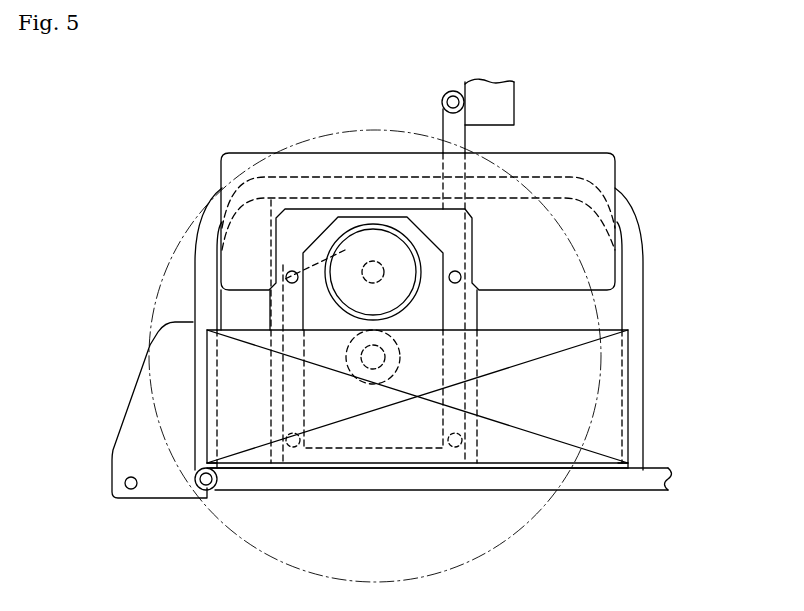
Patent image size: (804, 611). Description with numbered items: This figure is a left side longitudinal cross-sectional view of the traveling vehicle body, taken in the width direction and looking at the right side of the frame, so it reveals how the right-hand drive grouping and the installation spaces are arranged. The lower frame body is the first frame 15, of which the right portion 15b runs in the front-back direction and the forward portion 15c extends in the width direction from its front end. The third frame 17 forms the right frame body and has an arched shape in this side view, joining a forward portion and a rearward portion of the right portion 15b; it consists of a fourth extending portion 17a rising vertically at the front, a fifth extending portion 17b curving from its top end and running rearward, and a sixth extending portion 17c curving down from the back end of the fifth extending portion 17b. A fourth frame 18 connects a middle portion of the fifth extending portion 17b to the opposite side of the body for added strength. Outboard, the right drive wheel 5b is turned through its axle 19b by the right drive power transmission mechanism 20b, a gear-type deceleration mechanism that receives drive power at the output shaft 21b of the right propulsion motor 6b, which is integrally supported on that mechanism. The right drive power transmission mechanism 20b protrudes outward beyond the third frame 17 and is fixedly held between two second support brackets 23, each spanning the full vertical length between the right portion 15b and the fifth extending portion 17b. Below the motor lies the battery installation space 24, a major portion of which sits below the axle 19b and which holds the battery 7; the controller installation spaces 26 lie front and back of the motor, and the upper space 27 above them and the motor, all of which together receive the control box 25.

The right drive wheel 5b is at (497, 543).
The right propulsion motor 6b is at (357, 252).
The battery 7 is at (612, 422).
The first frame 15 is at (588, 494).
The right portion 15b is at (437, 482).
The forward portion 15c is at (195, 481).
The third frame 17 is at (636, 217).
The fourth extending portion 17a is at (205, 263).
The fifth extending portion 17b is at (310, 172).
The sixth extending portion 17c is at (637, 353).
The fourth frame 18 is at (442, 95).
The axle 19b is at (352, 372).
The right drive power transmission mechanism 20b is at (373, 450).
The output shaft 21b is at (375, 271).
The second support bracket 23 is at (270, 300).
The battery installation space 24 is at (243, 318).
The control box 25 is at (585, 162).
The controller installation space 26 is at (253, 225).
The upper space 27 is at (524, 170).